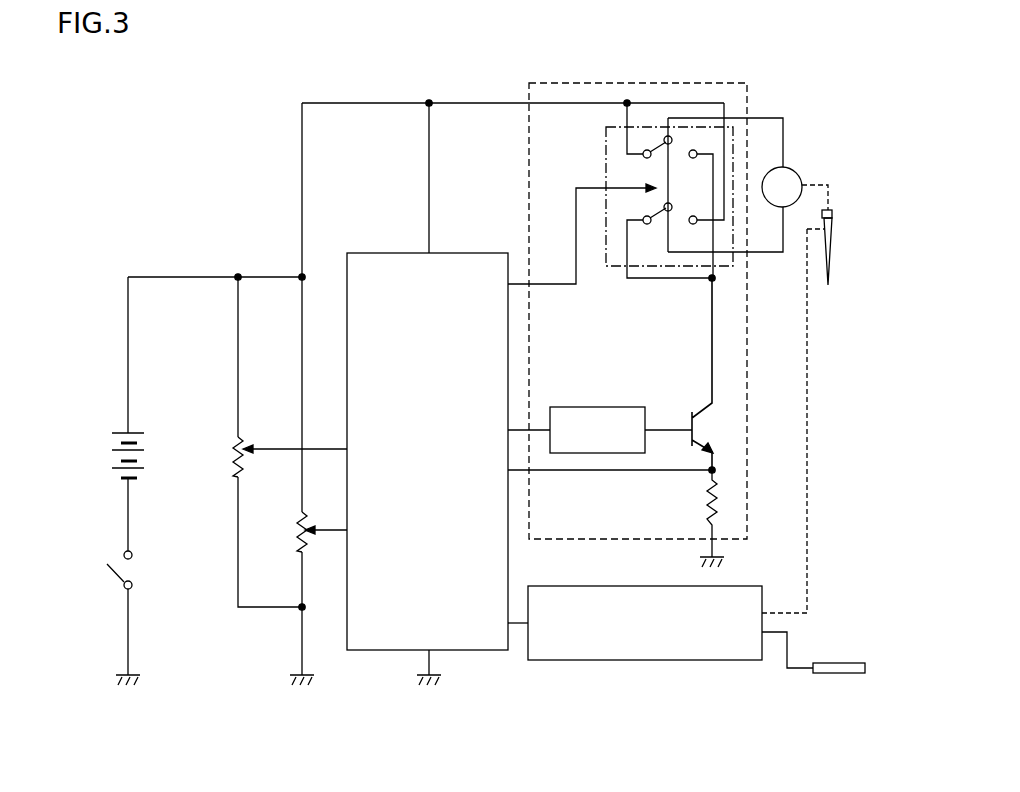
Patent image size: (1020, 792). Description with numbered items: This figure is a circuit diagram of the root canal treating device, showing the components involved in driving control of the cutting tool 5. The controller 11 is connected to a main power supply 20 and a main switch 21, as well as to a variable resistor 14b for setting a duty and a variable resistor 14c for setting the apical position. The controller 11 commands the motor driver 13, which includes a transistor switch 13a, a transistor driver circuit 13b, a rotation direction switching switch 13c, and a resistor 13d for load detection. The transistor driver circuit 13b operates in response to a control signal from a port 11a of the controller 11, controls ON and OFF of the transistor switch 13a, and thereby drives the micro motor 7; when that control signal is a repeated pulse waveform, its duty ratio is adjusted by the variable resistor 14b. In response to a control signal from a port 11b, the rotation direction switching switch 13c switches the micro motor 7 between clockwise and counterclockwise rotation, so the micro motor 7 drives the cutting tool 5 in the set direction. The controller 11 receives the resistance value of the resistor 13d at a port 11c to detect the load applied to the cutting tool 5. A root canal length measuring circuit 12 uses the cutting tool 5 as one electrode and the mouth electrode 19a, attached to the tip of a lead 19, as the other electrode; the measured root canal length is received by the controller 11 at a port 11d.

The cutting tool 5 is at (832, 254).
The micro motor 7 is at (800, 173).
The controller 11 is at (367, 253).
The port 11a is at (508, 431).
The port 11b is at (561, 240).
The port 11c is at (589, 471).
The port 11d is at (497, 624).
The root canal length measuring circuit 12 is at (636, 586).
The motor driver 13 is at (631, 83).
The transistor switch 13a is at (690, 421).
The transistor driver circuit 13b is at (596, 407).
The rotation direction switching switch 13c is at (620, 172).
The resistor for load detection 13d is at (705, 500).
The variable resistor for setting a duty 14b is at (234, 458).
The variable resistor for setting the apical position 14c is at (296, 531).
The lead 19 is at (787, 668).
The mouth electrode 19a is at (838, 663).
The main power supply 20 is at (126, 432).
The main switch 21 is at (112, 577).